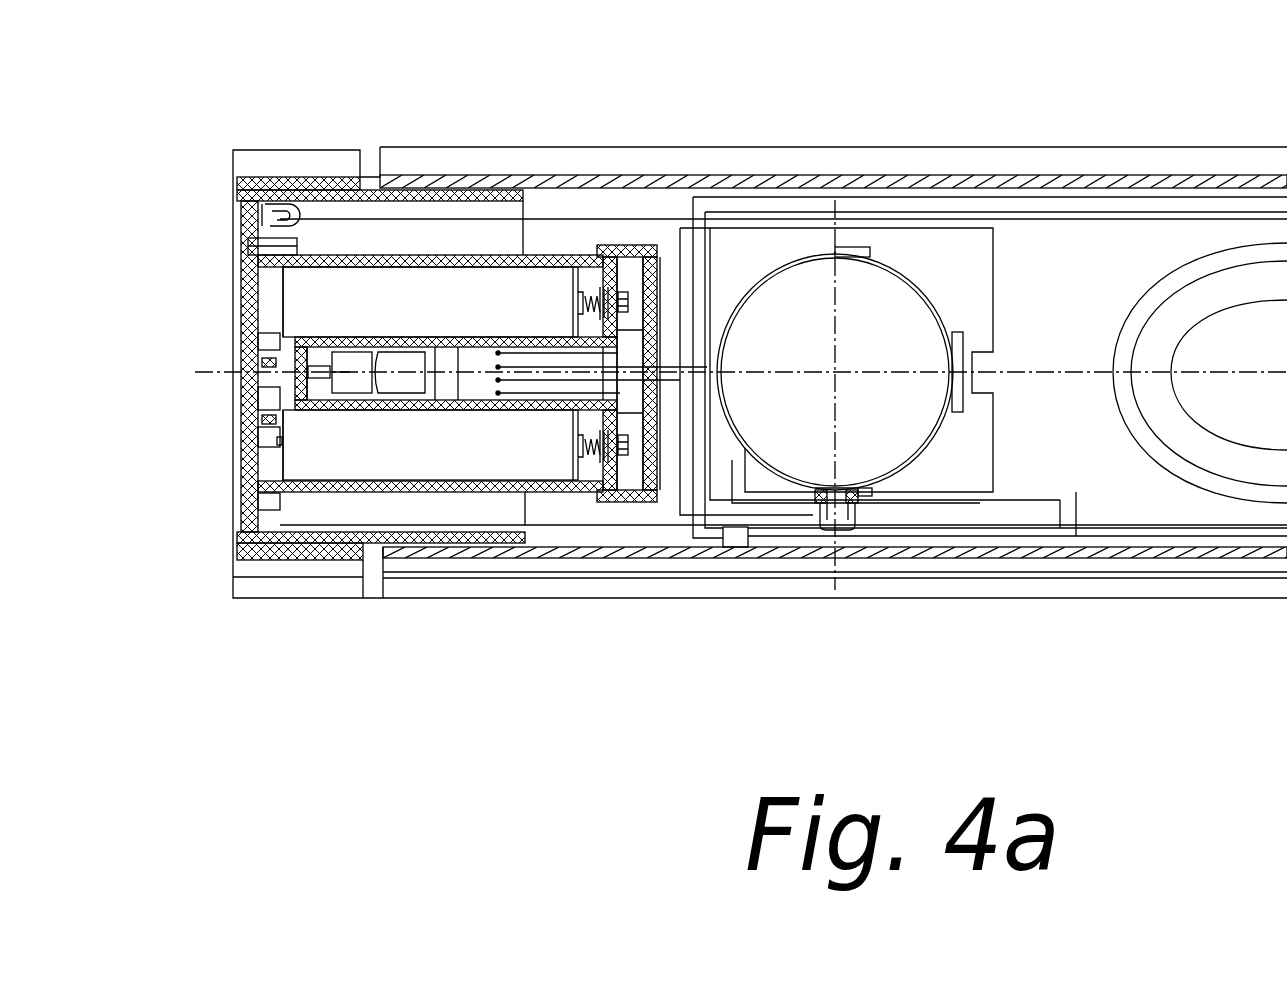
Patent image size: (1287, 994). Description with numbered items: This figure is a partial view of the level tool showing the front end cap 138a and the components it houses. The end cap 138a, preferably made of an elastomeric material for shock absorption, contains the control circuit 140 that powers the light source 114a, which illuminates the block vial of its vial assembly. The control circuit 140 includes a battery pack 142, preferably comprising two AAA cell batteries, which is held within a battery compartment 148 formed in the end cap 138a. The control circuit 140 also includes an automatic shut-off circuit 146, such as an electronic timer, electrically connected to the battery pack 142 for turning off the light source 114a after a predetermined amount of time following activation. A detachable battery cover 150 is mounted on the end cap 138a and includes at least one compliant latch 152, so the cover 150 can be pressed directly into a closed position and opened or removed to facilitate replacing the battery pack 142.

The front end cap 138a is at (288, 193).
The control circuit 140 is at (441, 302).
The battery pack 142 is at (325, 455).
The automatic shut-off circuit 146 is at (455, 387).
The battery compartment 148 is at (548, 485).
The battery cover 150 is at (253, 448).
The compliant latch 152 is at (263, 205).
The light source 114a is at (840, 517).